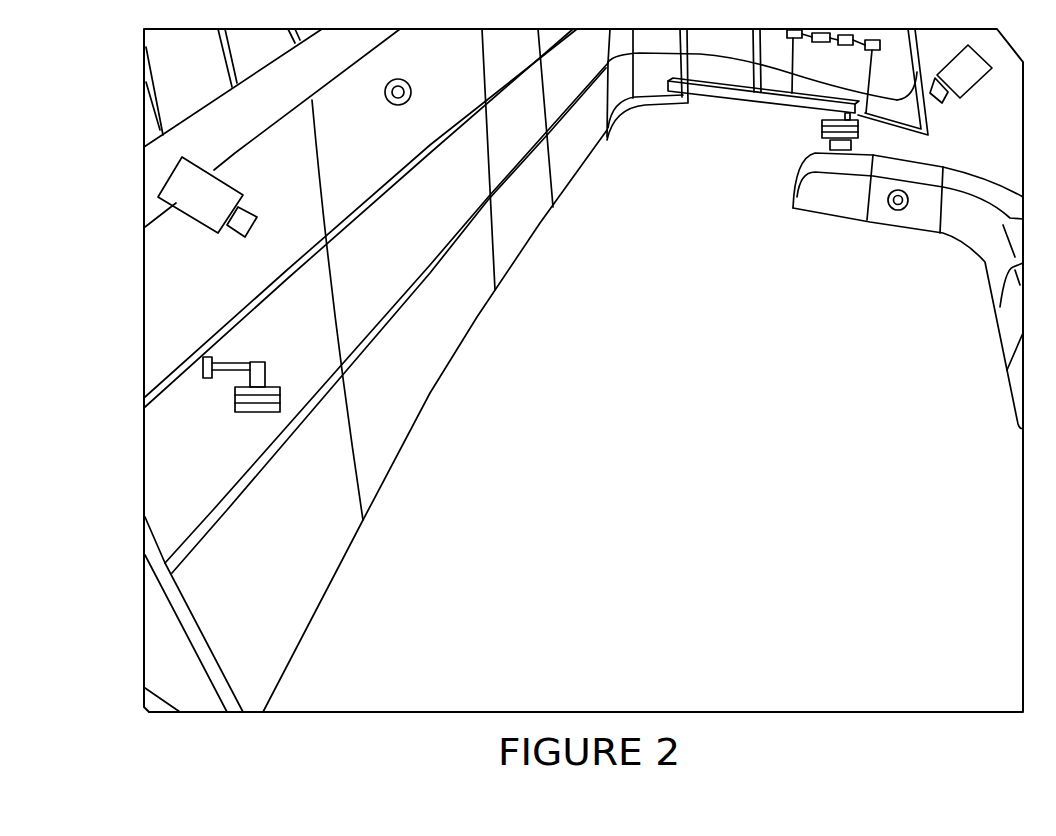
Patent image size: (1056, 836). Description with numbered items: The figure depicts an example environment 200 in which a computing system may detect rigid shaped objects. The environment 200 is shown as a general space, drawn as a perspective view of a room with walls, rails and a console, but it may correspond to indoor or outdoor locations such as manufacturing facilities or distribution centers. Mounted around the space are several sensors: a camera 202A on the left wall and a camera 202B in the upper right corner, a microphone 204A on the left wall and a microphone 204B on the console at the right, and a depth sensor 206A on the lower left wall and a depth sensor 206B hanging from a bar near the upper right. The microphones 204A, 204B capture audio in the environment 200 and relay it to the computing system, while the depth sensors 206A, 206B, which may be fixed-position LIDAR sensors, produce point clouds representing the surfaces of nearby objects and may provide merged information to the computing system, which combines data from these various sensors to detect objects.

The environment 200 is at (126, 102).
The camera 202A is at (195, 228).
The camera 202B is at (977, 92).
The microphone 204A is at (388, 110).
The microphone 204B is at (890, 205).
The depth sensor 206A is at (233, 418).
The depth sensor 206B is at (815, 137).